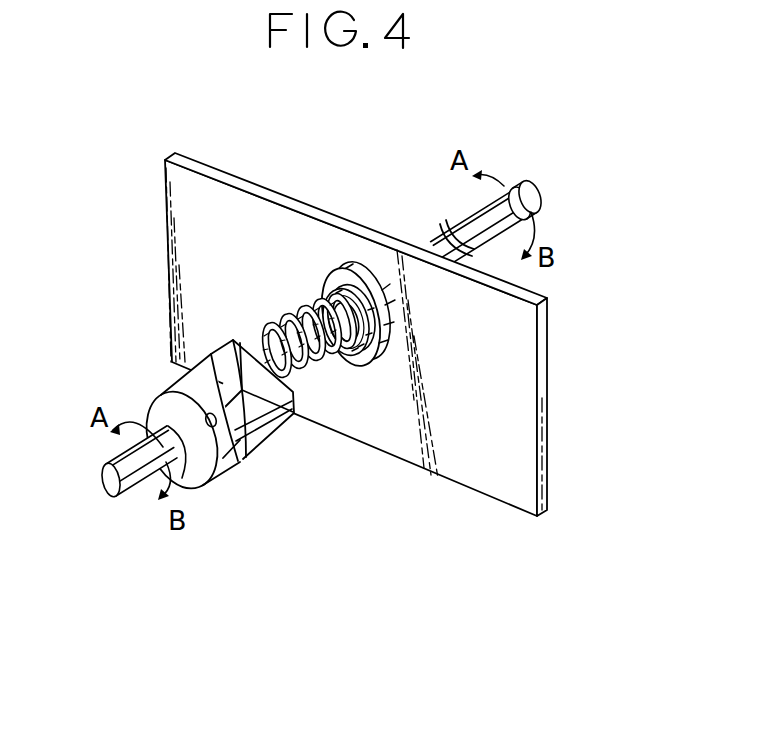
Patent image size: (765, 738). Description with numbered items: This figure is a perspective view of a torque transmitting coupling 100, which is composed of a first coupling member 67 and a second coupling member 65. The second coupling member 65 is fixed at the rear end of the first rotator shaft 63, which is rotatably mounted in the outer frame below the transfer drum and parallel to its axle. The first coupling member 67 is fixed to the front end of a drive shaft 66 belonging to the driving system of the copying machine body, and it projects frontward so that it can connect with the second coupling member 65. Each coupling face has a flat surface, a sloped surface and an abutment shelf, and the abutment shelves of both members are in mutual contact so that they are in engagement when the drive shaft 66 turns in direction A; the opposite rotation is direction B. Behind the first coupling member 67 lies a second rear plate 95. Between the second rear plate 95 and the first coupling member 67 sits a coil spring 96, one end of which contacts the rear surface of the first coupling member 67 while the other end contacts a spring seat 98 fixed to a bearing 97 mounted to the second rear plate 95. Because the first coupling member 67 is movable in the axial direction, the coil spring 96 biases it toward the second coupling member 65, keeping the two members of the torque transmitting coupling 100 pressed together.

The first rotator shaft 63 is at (137, 480).
The second coupling member 65 is at (222, 463).
The drive shaft 66 is at (527, 178).
The first coupling member 67 is at (277, 412).
The second rear plate 95 is at (517, 387).
The coil spring 96 is at (291, 327).
The bearing 97 is at (366, 273).
The spring seat 98 is at (366, 354).
The torque transmitting coupling 100 is at (267, 477).